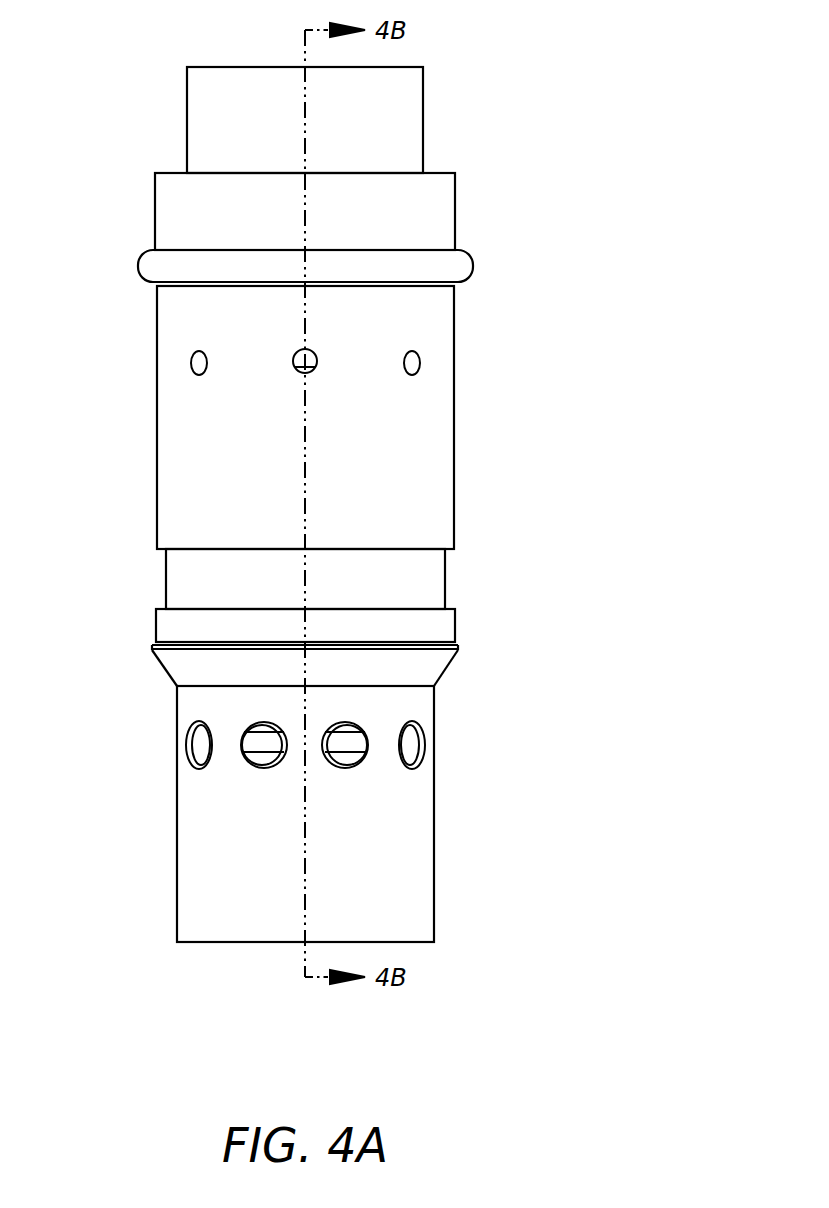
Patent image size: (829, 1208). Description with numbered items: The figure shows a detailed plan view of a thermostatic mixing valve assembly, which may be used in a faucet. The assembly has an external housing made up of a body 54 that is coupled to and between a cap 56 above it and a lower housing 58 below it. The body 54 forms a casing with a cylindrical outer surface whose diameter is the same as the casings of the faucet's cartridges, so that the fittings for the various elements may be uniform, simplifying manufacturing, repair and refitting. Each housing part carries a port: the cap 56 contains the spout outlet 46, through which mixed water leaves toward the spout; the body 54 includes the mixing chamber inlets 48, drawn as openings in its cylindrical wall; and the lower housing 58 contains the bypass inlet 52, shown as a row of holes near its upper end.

The spout outlet 46 is at (412, 55).
The mixing chamber inlets 48 is at (190, 358).
The bypass inlet 52 is at (462, 745).
The body 54 is at (455, 445).
The cap 56 is at (423, 128).
The lower housing 58 is at (434, 845).